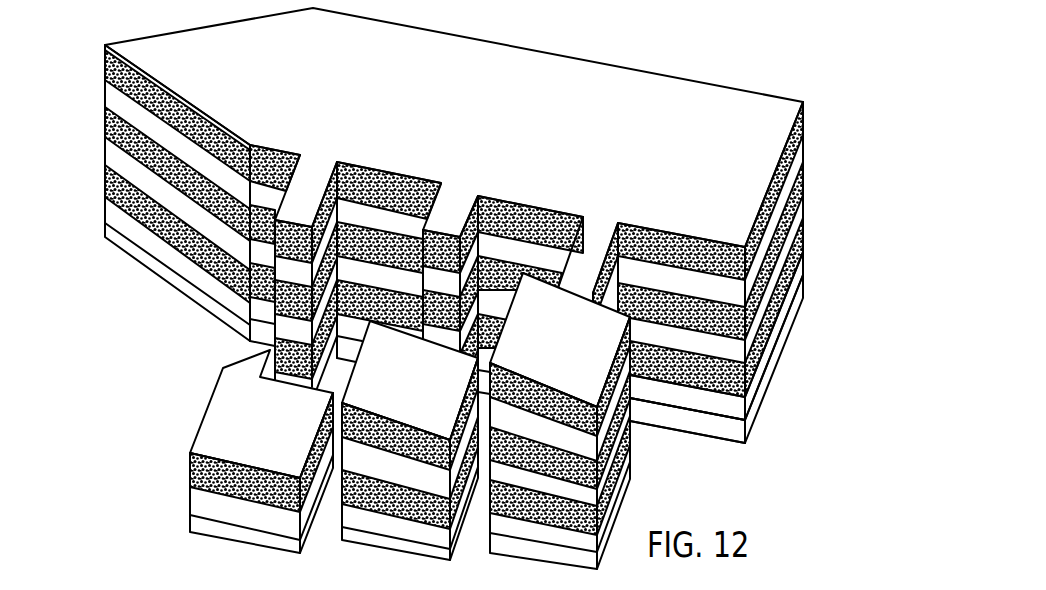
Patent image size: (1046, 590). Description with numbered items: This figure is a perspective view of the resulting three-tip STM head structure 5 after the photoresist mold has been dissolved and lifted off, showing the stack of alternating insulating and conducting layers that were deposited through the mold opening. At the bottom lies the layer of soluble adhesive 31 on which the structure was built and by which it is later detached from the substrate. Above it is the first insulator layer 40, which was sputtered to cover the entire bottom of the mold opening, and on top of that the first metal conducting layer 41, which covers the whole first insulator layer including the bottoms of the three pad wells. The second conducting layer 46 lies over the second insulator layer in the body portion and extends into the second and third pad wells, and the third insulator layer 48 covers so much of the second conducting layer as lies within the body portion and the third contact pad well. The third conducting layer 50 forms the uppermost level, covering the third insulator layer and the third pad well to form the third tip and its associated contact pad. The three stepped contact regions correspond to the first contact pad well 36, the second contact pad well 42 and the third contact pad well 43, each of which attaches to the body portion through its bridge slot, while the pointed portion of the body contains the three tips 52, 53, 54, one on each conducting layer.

The layered structure 5 is at (172, 314).
The soluble adhesive 31 is at (732, 433).
The first contact pad well 36 is at (224, 412).
The first insulator layer 40 is at (676, 402).
The first metal conducting layer 41 is at (768, 340).
The second contact pad well 42 is at (405, 447).
The third contact pad well 43 is at (572, 411).
The second conducting layer 46 is at (424, 394).
The third insulator layer 48 is at (803, 157).
The third conducting layer 50 is at (648, 105).
The tip 52 is at (100, 57).
The tip 53 is at (100, 124).
The tip 54 is at (101, 167).